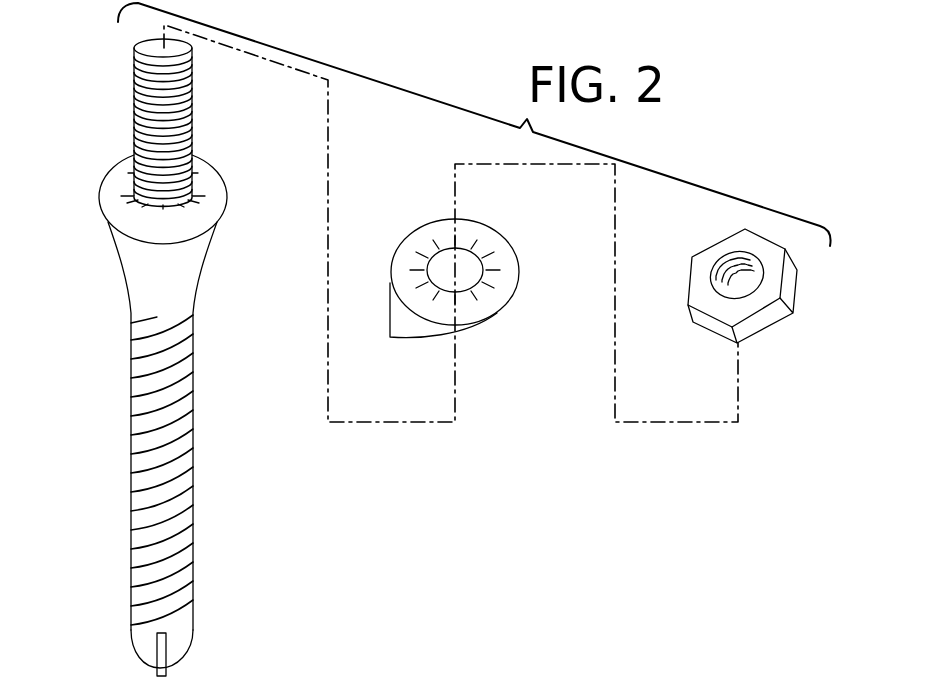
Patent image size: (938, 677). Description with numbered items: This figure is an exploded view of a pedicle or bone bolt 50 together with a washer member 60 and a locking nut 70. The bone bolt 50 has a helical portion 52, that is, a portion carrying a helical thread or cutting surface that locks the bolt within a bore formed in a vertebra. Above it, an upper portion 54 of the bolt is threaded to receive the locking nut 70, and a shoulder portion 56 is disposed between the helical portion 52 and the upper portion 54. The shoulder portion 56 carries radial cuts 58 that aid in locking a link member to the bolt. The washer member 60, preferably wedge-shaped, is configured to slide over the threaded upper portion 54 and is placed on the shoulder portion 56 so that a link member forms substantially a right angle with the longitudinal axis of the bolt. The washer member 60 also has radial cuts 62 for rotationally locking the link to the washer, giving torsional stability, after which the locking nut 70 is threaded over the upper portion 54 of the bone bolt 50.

The bone bolt 50 is at (232, 183).
The helical portion 52 is at (131, 449).
The upper portion 54 is at (135, 126).
The shoulder portion 56 is at (107, 190).
The radial cuts 58 is at (142, 211).
The washer member 60 is at (500, 223).
The radial cuts 62 is at (466, 302).
The locking nut 70 is at (790, 328).